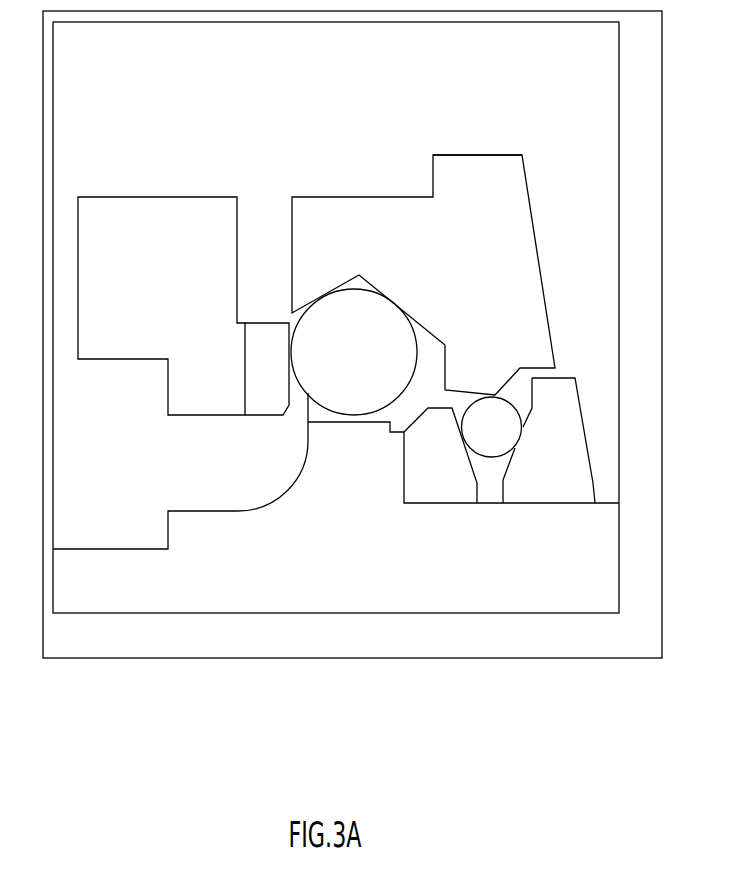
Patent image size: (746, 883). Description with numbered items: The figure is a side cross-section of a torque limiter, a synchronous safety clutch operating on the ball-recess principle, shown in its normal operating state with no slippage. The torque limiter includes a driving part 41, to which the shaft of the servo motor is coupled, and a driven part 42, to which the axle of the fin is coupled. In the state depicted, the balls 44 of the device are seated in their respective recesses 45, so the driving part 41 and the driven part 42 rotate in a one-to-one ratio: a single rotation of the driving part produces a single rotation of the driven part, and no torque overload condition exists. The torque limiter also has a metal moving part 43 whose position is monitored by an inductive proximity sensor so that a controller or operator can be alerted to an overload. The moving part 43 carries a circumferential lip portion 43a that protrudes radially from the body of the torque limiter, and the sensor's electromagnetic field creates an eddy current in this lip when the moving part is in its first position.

The driving part 41 is at (187, 523).
The driven part 42 is at (166, 203).
The moving part 43 is at (429, 268).
The circumferential lip portion 43a is at (467, 167).
The balls 44 is at (343, 362).
The recesses 45 is at (308, 414).